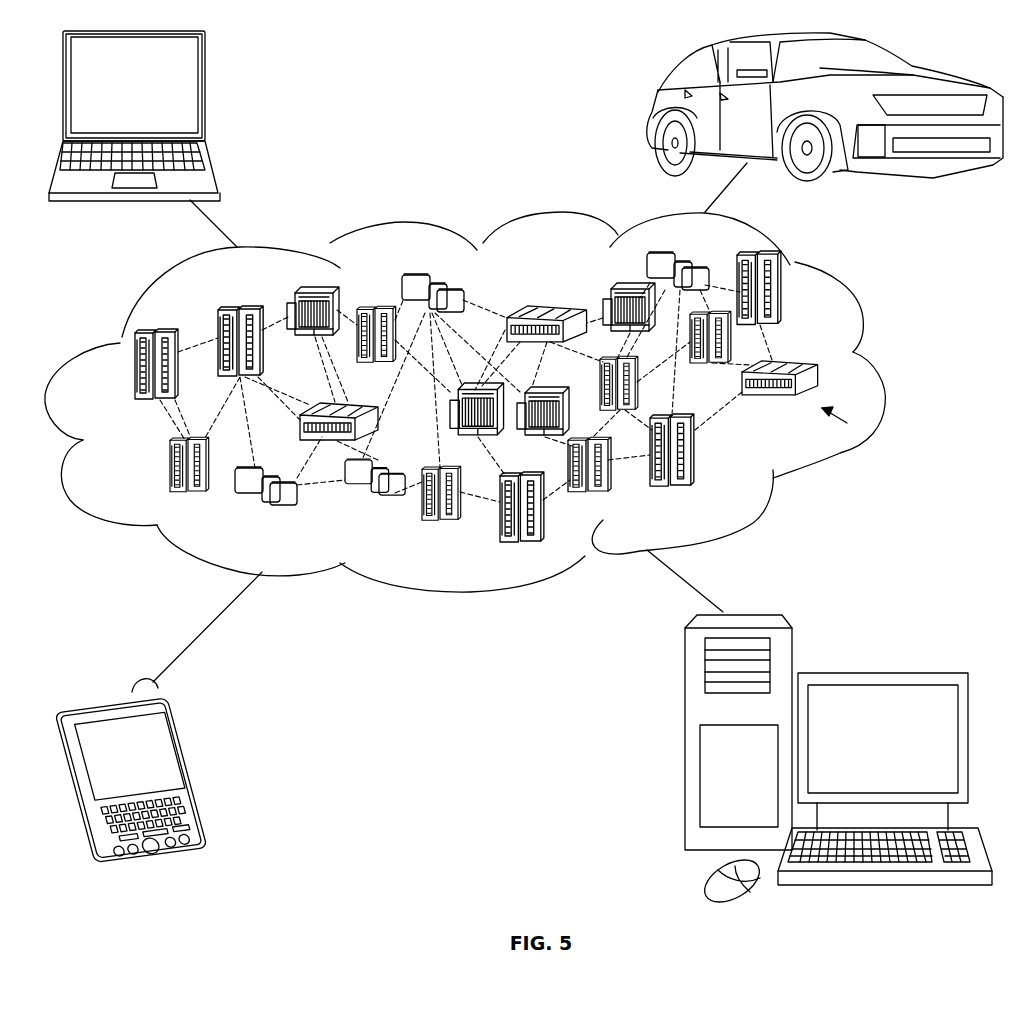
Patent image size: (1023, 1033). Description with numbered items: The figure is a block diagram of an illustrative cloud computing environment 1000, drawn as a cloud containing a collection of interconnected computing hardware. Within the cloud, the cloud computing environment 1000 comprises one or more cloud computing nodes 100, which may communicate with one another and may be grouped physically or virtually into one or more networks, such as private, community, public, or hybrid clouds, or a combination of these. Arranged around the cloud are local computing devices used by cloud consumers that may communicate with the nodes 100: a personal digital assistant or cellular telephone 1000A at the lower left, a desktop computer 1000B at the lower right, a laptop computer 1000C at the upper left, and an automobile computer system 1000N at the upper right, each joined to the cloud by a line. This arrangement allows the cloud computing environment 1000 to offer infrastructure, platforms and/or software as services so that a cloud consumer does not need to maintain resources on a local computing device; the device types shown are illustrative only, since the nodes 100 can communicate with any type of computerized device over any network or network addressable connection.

The cloud computing node 100 is at (847, 423).
The cloud computing environment 1000 is at (880, 375).
The personal digital assistant (PDA) or cellular telephone 1000A is at (197, 770).
The desktop computer 1000B is at (878, 673).
The laptop computer 1000C is at (205, 95).
The automobile computer system 1000N is at (652, 110).